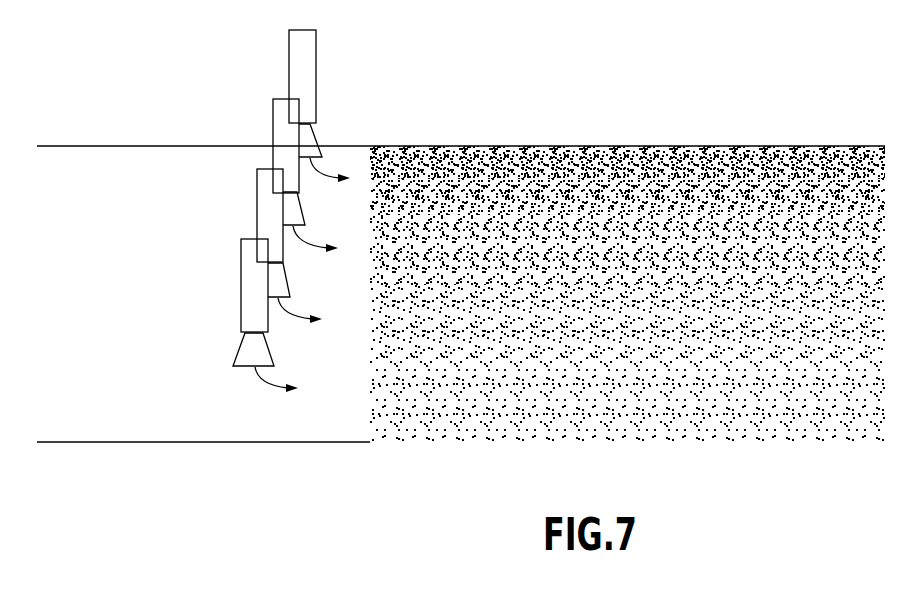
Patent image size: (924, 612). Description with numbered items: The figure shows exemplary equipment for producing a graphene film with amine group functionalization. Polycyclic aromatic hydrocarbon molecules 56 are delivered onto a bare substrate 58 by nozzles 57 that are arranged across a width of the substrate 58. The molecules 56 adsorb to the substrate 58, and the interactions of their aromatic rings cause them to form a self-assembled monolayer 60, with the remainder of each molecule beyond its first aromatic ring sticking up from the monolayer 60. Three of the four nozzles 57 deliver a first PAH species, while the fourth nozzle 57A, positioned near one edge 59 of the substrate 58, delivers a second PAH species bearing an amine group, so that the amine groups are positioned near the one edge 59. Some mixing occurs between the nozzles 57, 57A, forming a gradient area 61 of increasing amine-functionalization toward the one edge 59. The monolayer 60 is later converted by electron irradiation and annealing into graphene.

The polycyclic aromatic hydrocarbon (PAH) molecules 56 is at (258, 374).
The nozzles 57 is at (273, 158).
The fourth nozzle 57A is at (288, 66).
The substrate 58 is at (140, 349).
The one edge 59 is at (376, 104).
The self-assembled monolayer (SAM) 60 is at (627, 297).
The gradient area 61 is at (553, 228).